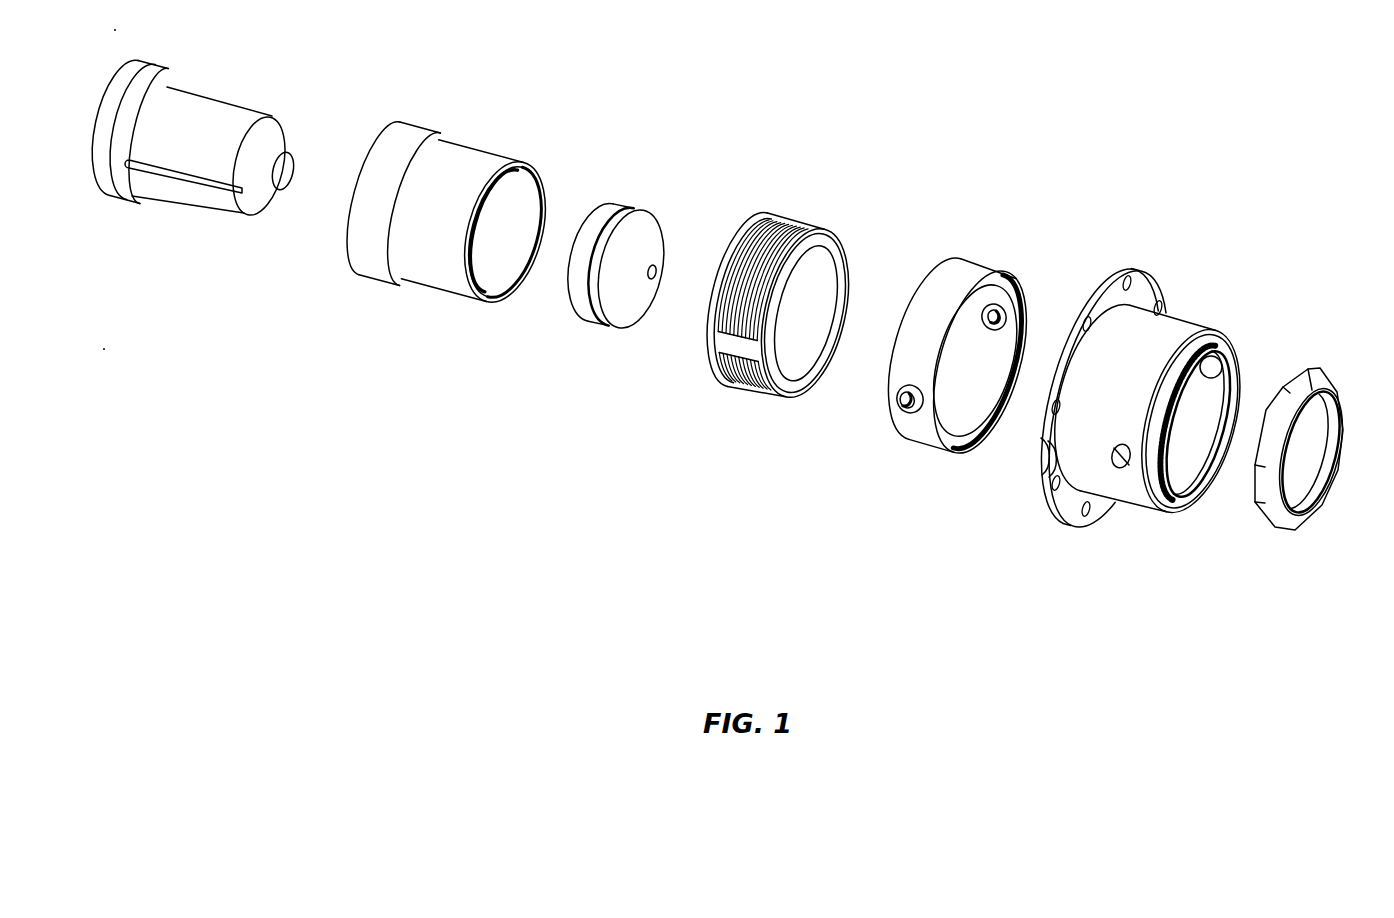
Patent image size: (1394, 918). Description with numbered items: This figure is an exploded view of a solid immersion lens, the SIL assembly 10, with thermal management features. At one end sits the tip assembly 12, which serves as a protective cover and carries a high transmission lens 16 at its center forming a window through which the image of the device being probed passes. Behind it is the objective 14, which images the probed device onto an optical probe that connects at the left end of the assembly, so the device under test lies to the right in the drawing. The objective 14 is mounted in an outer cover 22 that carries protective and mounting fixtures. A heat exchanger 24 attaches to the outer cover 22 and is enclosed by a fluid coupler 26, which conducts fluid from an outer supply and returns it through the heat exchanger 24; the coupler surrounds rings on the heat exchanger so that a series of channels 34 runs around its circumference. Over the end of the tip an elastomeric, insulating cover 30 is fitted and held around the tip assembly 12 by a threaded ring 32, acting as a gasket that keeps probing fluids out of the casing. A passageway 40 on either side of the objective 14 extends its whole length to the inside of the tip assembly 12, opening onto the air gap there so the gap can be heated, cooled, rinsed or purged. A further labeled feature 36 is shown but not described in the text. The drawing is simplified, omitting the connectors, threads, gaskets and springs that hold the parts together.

The SIL assembly 10 is at (516, 562).
The tip assembly 12 is at (587, 317).
The objective 14 is at (223, 213).
The high transmission lens 16 is at (656, 268).
The outer cover 22 is at (453, 280).
The heat exchanger 24 is at (815, 375).
The fluid coupler 26 is at (950, 273).
The elastomeric insulating cover 30 is at (1177, 327).
The threaded ring 32 is at (1321, 380).
The channels 34 is at (795, 222).
The set screw hole 36 is at (908, 412).
The passageway 40 is at (196, 180).